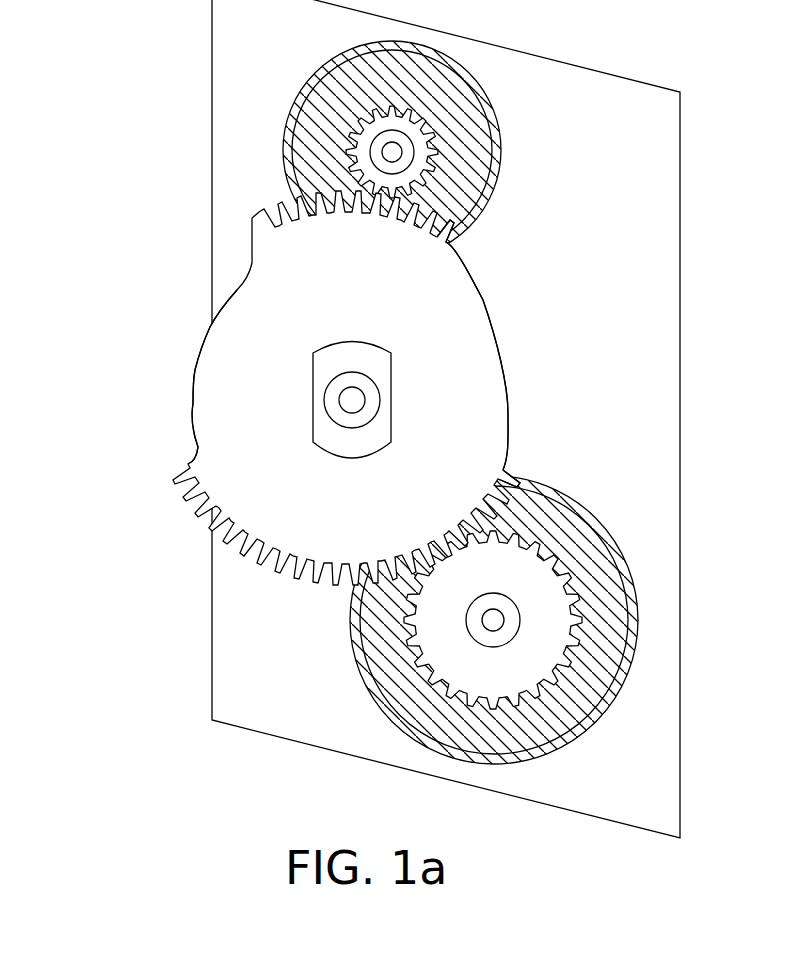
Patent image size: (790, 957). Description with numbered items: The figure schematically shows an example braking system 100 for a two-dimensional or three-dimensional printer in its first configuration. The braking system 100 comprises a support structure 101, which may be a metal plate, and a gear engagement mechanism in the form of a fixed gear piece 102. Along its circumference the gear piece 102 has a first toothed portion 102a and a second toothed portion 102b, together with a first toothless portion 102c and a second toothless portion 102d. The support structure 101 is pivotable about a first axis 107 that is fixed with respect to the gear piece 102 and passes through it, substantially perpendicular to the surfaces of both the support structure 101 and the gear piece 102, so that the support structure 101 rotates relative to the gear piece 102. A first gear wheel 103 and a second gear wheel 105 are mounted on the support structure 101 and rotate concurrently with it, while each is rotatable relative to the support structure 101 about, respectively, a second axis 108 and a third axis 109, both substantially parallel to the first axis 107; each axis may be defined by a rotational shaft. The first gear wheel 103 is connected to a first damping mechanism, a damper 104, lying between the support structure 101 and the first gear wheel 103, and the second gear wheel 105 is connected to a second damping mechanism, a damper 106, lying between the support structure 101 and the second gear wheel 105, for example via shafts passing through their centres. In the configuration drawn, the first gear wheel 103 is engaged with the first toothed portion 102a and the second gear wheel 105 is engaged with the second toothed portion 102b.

The braking system 100 is at (145, 61).
The support structure 101 is at (212, 183).
The gear piece 102 is at (480, 325).
The first toothed portion 102a is at (455, 237).
The second toothed portion 102b is at (513, 465).
The first toothless portion 102c is at (507, 357).
The second toothless portion 102d is at (195, 371).
The first gear wheel 103 is at (492, 192).
The first damping mechanism 104 is at (477, 137).
The second gear wheel 105 is at (425, 637).
The second damping mechanism 106 is at (377, 621).
The first axis 107 is at (352, 400).
The second axis 108 is at (392, 150).
The third axis 109 is at (493, 620).